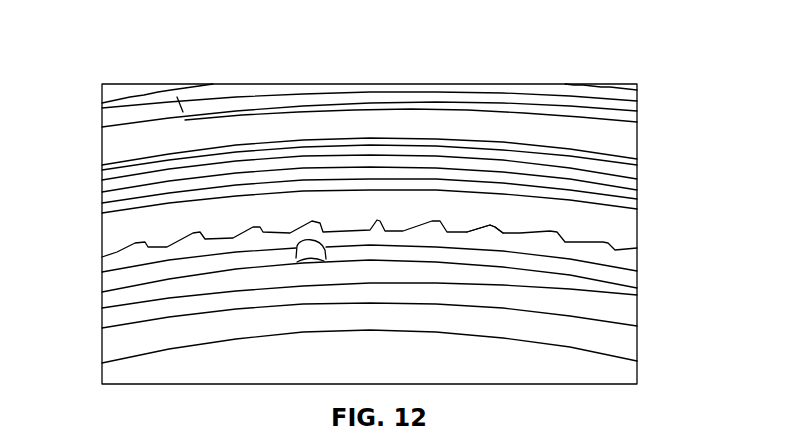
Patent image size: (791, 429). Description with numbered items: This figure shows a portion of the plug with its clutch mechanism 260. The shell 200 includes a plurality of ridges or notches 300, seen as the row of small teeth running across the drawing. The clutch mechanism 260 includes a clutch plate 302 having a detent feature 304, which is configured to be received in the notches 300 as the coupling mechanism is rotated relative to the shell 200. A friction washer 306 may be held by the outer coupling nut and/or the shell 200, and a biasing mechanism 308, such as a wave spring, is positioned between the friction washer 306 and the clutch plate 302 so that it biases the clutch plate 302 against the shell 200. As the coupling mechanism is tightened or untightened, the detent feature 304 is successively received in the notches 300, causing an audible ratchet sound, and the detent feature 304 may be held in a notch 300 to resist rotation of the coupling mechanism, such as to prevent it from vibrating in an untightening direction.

The shell 200 is at (623, 143).
The clutch mechanism 260 is at (622, 238).
The notches 300 is at (487, 214).
The clutch plate 302 is at (117, 280).
The detent feature 304 is at (308, 228).
The friction washer 306 is at (117, 340).
The biasing mechanism 308 is at (547, 277).